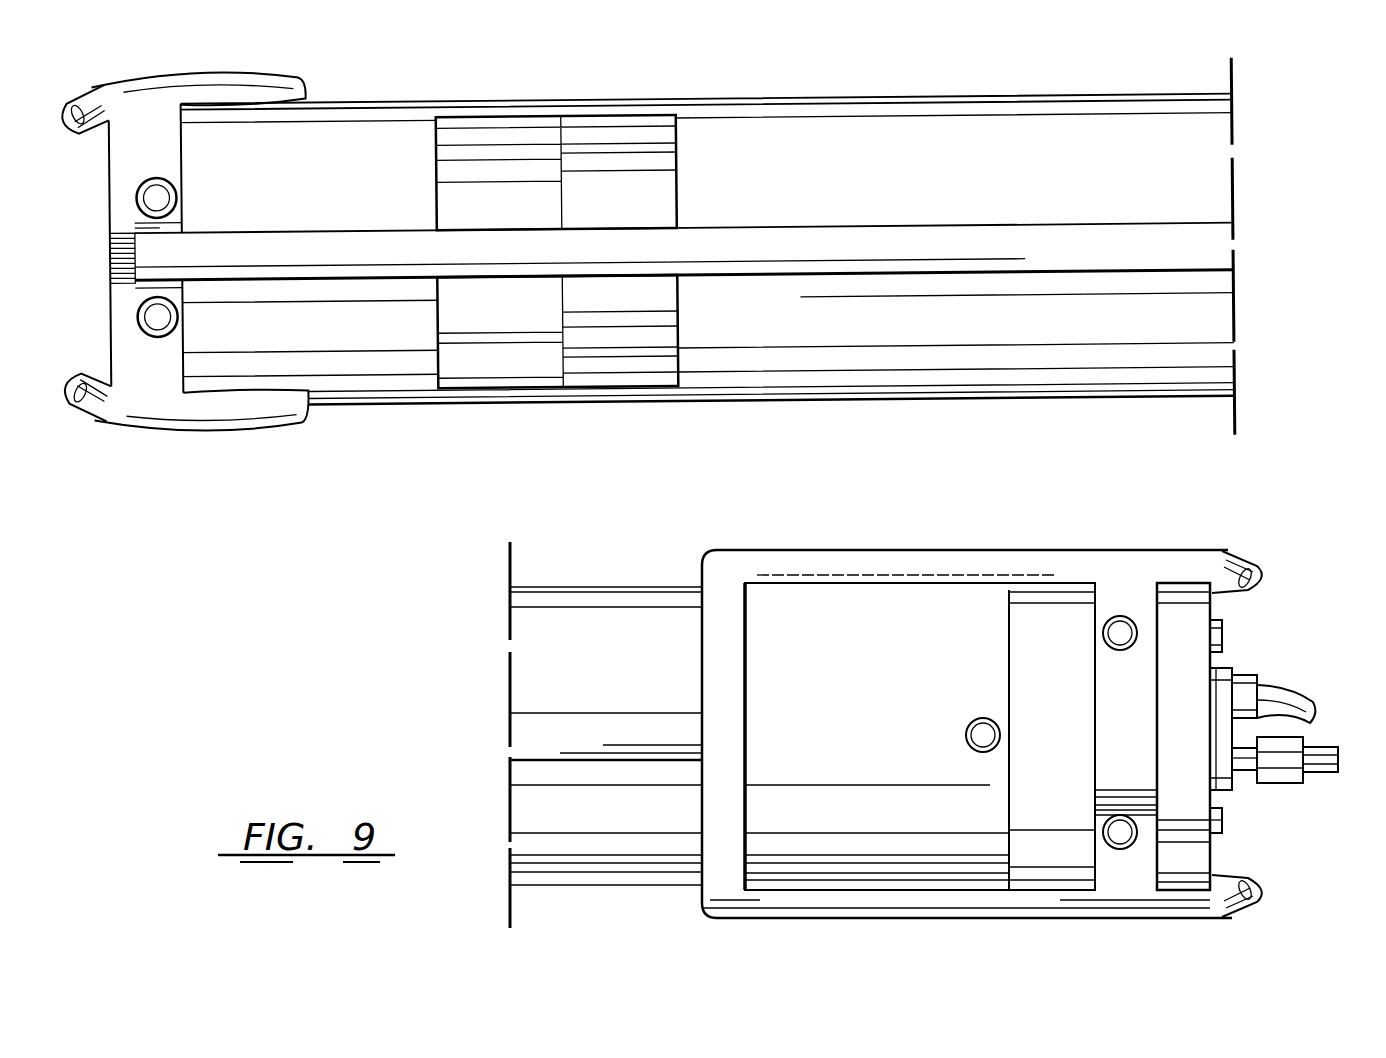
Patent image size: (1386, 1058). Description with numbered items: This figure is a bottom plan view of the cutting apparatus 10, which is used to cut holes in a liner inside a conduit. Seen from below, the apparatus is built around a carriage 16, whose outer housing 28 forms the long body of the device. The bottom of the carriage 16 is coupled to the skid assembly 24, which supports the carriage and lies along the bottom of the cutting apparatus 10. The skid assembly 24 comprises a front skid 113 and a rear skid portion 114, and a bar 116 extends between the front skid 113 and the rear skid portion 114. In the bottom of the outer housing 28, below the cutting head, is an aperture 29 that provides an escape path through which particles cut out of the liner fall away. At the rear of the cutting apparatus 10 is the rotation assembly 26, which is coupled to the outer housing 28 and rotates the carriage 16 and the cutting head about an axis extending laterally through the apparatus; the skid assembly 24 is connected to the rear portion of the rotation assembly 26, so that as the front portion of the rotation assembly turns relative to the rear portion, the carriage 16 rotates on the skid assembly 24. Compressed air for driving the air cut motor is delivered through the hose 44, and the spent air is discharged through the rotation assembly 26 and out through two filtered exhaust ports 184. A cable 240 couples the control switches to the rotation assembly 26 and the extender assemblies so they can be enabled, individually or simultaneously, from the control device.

The cutting apparatus 10 is at (843, 97).
The carriage 16 is at (957, 376).
The skid assembly 24 is at (102, 288).
The rotation assembly 26 is at (945, 592).
The outer housing 28 is at (993, 140).
The aperture 29 is at (662, 203).
The hose 44 is at (1322, 745).
The front skid 113 is at (162, 410).
The rear skid portion 114 is at (1110, 568).
The bar 116 is at (827, 266).
The filtered exhaust ports 184 is at (1223, 622).
The cable 240 is at (1277, 687).